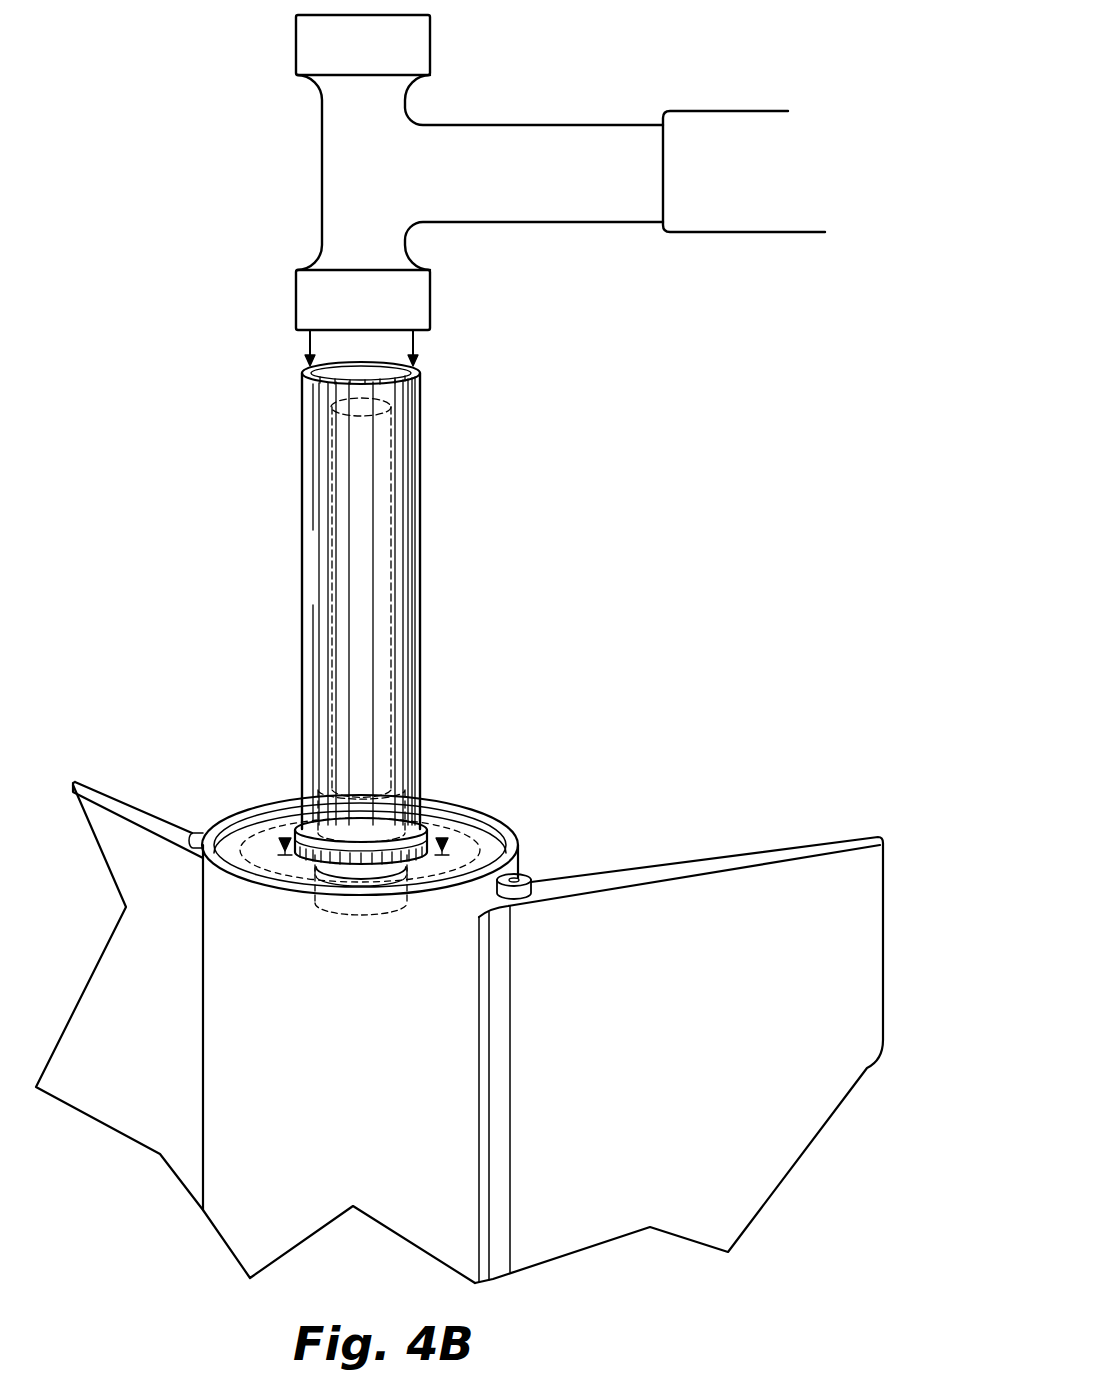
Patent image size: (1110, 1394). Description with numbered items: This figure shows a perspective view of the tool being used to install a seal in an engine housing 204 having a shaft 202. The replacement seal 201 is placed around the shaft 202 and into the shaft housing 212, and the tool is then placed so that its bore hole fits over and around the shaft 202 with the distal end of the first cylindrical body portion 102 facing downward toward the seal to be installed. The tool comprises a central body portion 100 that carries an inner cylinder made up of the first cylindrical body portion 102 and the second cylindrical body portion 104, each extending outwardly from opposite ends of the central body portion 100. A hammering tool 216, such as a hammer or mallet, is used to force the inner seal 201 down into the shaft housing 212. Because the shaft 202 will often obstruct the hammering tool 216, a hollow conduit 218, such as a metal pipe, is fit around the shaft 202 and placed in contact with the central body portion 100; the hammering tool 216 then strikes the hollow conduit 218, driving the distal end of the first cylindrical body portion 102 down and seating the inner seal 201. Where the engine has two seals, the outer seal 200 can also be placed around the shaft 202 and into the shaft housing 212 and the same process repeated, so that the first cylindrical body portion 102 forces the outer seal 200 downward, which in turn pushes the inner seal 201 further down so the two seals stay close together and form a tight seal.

The hammering tool 216 is at (625, 125).
The hollow conduit 218 is at (415, 536).
The shaft 202 is at (330, 447).
The second cylindrical body portion 104 is at (425, 802).
The central body portion 100 is at (470, 830).
The first cylindrical body portion 102 is at (470, 838).
The replacement seal 201 is at (316, 896).
The outer seal 200 is at (253, 863).
The engine housing 204 is at (518, 857).
The shaft housing 212 is at (430, 868).